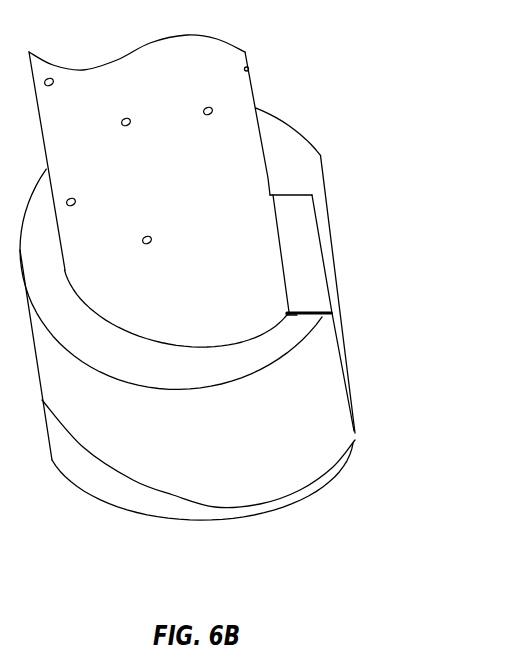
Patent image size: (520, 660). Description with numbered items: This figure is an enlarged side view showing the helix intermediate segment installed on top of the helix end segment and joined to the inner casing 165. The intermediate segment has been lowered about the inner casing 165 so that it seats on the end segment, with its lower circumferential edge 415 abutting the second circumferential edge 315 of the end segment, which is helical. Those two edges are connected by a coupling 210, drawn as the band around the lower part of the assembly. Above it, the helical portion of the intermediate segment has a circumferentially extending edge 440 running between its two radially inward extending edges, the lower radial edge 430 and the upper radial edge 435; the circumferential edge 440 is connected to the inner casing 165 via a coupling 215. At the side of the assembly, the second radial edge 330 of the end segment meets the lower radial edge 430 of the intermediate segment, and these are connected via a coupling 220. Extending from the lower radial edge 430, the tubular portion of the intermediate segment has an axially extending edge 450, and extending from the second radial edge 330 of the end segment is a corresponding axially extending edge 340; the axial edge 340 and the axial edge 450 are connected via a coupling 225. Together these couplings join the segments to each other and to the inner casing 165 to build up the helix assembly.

The inner casing 165 is at (183, 183).
The coupling 210 is at (198, 492).
The coupling 215 is at (174, 338).
The coupling 220 is at (287, 320).
The coupling 225 is at (358, 415).
The second radial edge 330 is at (297, 317).
The axially extending edge 340 is at (348, 395).
The second circumferentially extending edge 315 is at (202, 513).
The lower circumferential edge 415 is at (163, 500).
The lower radial edge 430 is at (330, 317).
The upper radial edge 435 is at (274, 197).
The circumferentially extending edge 440 is at (138, 333).
The axially extending edge 450 is at (317, 247).